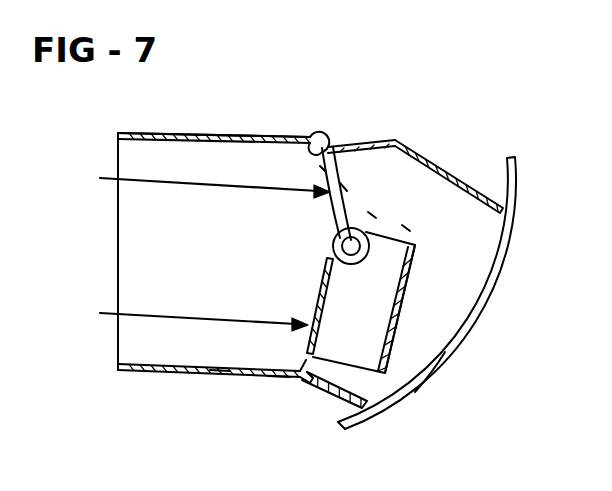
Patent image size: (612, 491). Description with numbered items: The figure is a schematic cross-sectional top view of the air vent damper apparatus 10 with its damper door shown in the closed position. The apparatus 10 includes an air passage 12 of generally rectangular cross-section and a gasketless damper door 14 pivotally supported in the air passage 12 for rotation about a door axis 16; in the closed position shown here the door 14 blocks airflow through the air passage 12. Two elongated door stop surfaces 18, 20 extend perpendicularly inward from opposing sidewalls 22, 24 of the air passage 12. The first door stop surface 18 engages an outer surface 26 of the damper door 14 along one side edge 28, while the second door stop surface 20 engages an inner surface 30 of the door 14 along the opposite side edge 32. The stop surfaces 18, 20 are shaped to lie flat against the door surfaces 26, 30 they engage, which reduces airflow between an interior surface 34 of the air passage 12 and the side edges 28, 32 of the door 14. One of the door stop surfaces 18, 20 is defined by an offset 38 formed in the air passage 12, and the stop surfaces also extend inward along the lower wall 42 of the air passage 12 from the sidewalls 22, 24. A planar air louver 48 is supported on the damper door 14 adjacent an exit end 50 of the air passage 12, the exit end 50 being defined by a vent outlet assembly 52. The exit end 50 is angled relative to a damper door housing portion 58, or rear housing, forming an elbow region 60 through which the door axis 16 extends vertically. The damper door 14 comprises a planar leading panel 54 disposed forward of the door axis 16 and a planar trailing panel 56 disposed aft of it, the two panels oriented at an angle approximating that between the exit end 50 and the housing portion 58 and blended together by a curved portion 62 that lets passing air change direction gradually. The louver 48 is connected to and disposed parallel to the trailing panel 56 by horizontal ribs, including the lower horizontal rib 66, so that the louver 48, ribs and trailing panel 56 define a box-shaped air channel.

The air vent damper apparatus 10 is at (243, 116).
The air passage 12 is at (322, 400).
The gasketless damper door 14 is at (332, 210).
The door axis 16 is at (378, 233).
The first door stop surface 18 is at (312, 137).
The second door stop surface 20 is at (310, 381).
The sidewall 22 is at (206, 141).
The sidewall 24 is at (195, 368).
The outer surface 26 is at (345, 306).
The side edge 28 is at (322, 170).
The inner surface 30 is at (333, 288).
The side edge 32 is at (275, 380).
The interior surface 34 is at (150, 265).
The offset 38 is at (343, 187).
The lower wall 42 is at (136, 214).
The planar air louver 48 is at (420, 240).
The exit end 50 is at (477, 258).
The vent outlet assembly 52 is at (426, 381).
The leading panel 54 is at (372, 215).
The trailing panel 56 is at (307, 346).
The damper door housing portion 58 is at (220, 374).
The elbow region 60 is at (406, 228).
The curved portion 62 is at (226, 263).
The lower horizontal rib 66 is at (410, 290).